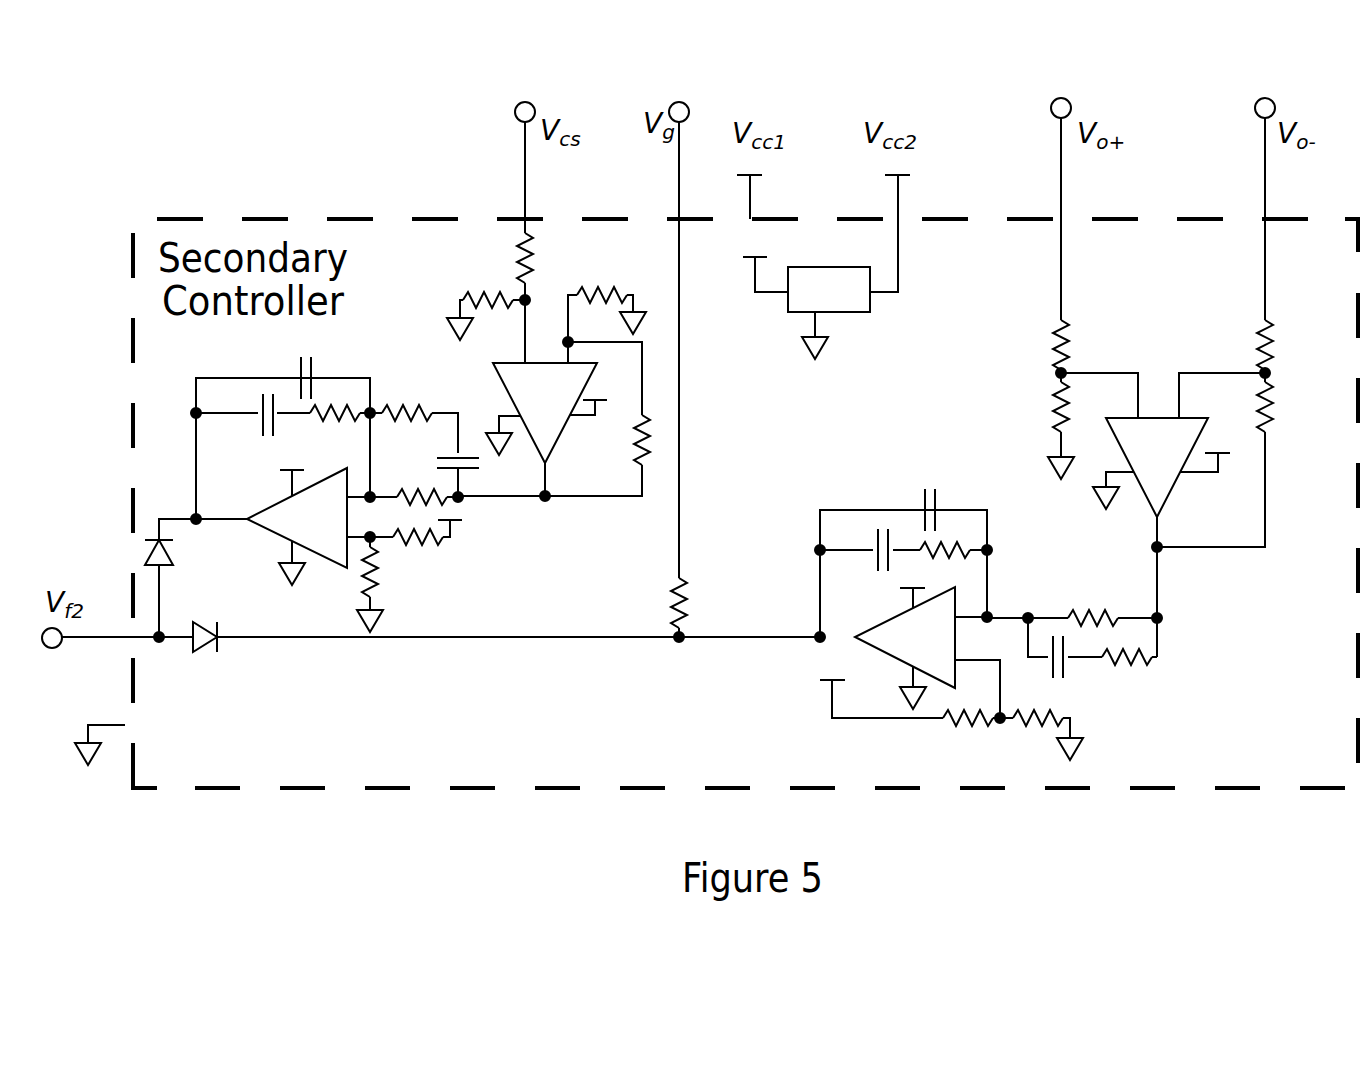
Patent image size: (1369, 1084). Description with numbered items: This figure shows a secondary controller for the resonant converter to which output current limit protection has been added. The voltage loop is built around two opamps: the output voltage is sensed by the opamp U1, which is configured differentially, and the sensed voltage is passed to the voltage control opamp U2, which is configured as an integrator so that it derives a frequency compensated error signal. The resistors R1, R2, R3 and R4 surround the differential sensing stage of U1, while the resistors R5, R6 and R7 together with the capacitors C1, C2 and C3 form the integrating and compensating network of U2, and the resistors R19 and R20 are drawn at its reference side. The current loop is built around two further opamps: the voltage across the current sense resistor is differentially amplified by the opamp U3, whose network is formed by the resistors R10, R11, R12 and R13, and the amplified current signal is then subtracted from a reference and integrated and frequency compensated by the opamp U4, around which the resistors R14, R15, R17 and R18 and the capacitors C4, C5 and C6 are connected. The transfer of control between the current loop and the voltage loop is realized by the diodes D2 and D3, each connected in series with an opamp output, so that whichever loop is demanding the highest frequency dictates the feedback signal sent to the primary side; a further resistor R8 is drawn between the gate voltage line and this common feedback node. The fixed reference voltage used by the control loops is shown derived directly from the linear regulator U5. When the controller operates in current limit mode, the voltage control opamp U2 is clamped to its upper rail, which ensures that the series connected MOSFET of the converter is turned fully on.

The resistor R1 is at (1043, 351).
The resistor R2 is at (1045, 430).
The resistor R3 is at (1286, 351).
The resistor R4 is at (1236, 464).
The resistor R5 is at (1072, 595).
The resistor R6 is at (1129, 679).
The resistor R7 is at (953, 534).
The resistor R8 is at (700, 607).
The resistor R10 is at (500, 298).
The resistor R11 is at (486, 320).
The resistor R12 is at (607, 294).
The resistor R13 is at (618, 419).
The resistor R14 is at (402, 479).
The resistor R15 is at (384, 419).
The resistor R17 is at (439, 554).
The resistor R18 is at (395, 584).
The resistor R19 is at (888, 724).
The resistor R20 is at (1041, 739).
The capacitor C1 is at (947, 501).
The capacitor C2 is at (870, 542).
The capacitor C3 is at (1065, 658).
The capacitor C4 is at (452, 460).
The capacitor C5 is at (327, 372).
The capacitor C6 is at (253, 408).
The opamp U1 is at (1177, 537).
The voltage control opamp U2 is at (921, 651).
The opamp U3 is at (566, 429).
The integrator/error amplifier configured opamp U4 is at (300, 523).
The linear regulator U5 is at (785, 295).
The diode D2 is at (196, 578).
The diode D3 is at (203, 656).